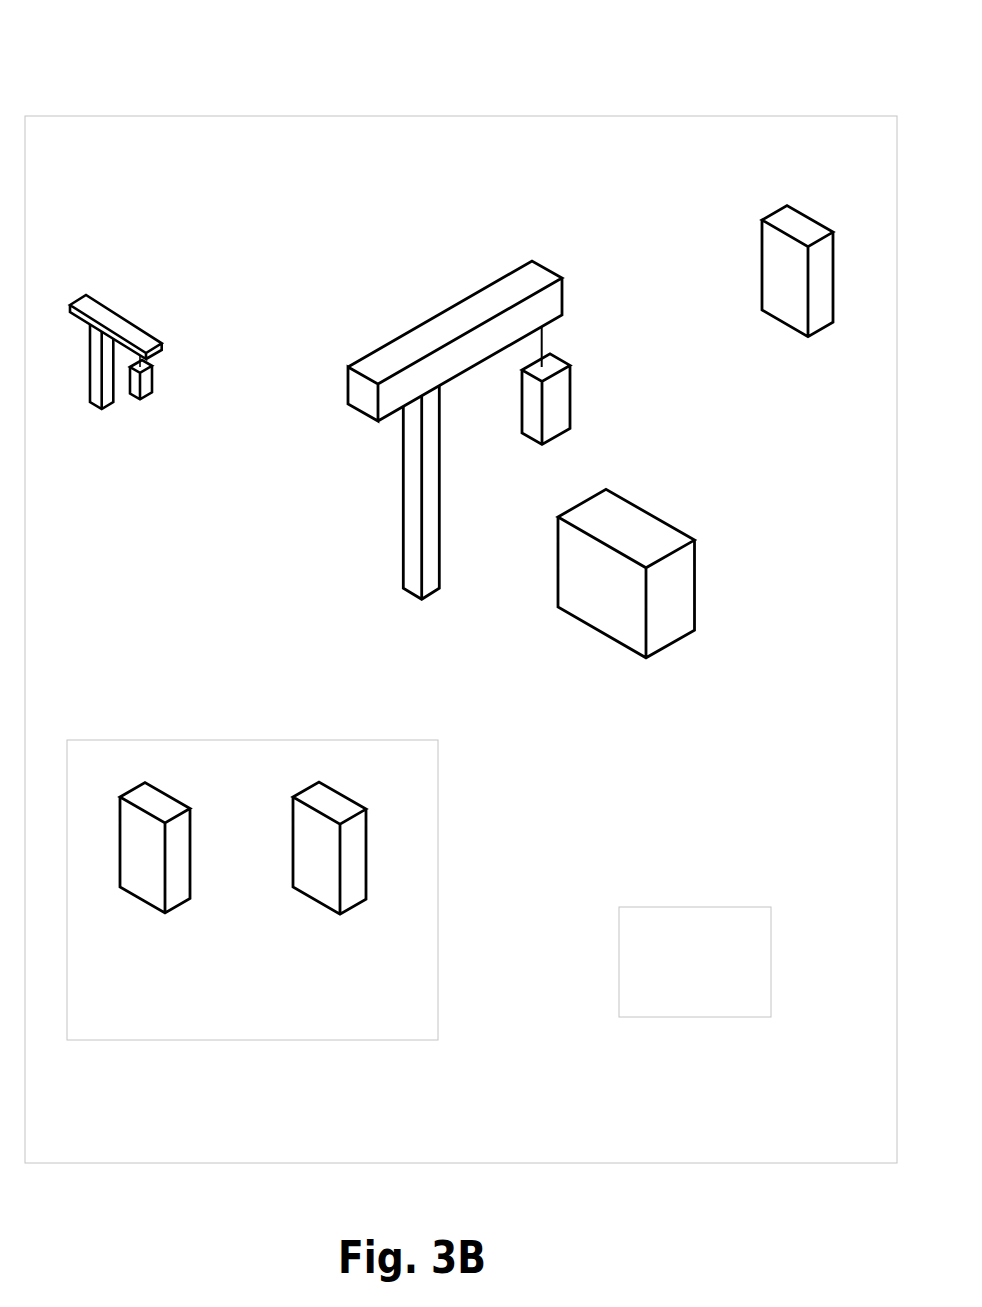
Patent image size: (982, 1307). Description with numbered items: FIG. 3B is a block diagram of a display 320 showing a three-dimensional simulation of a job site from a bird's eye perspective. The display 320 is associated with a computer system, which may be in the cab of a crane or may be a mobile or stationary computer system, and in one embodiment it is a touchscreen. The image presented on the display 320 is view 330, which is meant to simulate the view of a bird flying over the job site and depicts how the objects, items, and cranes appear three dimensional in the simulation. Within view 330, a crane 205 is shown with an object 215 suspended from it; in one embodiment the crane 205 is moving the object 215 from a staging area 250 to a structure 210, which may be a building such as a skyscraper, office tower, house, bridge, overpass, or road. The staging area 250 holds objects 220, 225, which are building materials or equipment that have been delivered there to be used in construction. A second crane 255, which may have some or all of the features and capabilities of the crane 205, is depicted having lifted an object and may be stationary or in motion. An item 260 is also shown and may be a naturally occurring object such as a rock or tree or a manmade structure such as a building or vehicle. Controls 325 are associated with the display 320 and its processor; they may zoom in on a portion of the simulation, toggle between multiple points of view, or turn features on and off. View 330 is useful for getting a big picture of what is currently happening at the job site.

The crane 205 is at (402, 357).
The structure 210 is at (668, 583).
The object 215 is at (545, 402).
The object 220 is at (160, 808).
The object 225 is at (325, 807).
The staging area 250 is at (232, 998).
The second crane 255 is at (132, 322).
The item 260 is at (778, 295).
The display 320 is at (558, 1103).
The controls 325 is at (675, 986).
The view 330 is at (711, 60).